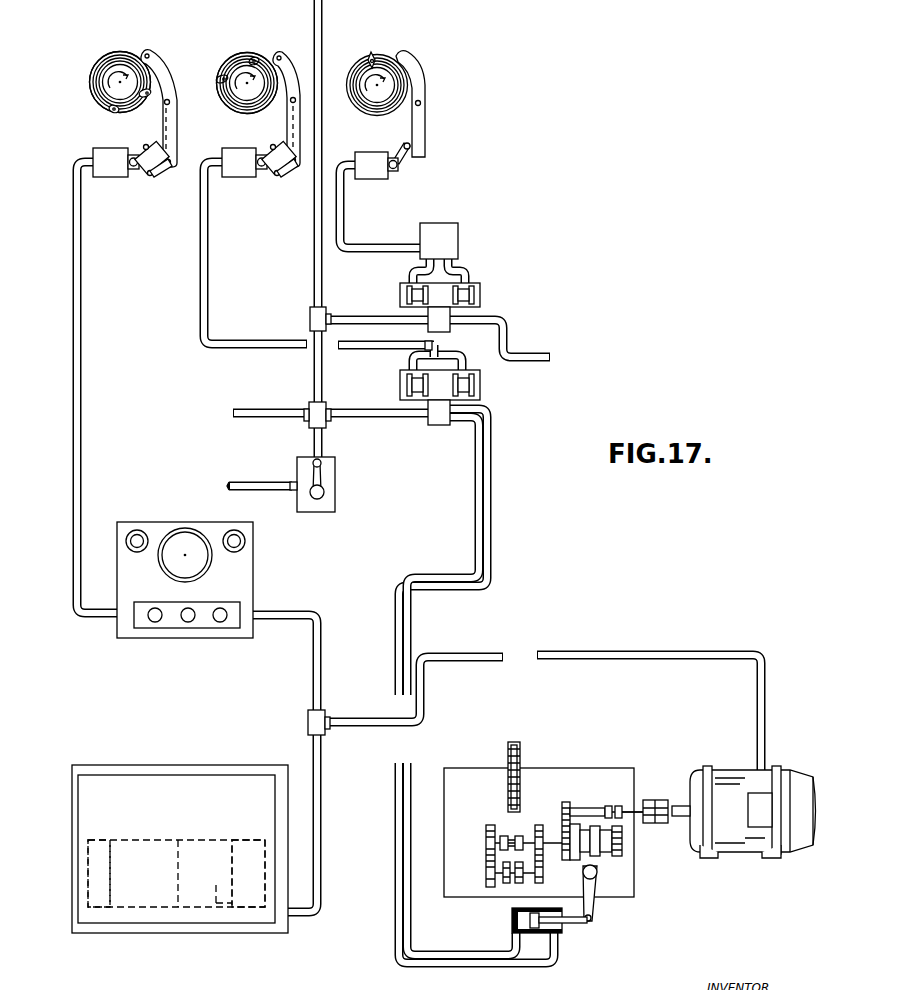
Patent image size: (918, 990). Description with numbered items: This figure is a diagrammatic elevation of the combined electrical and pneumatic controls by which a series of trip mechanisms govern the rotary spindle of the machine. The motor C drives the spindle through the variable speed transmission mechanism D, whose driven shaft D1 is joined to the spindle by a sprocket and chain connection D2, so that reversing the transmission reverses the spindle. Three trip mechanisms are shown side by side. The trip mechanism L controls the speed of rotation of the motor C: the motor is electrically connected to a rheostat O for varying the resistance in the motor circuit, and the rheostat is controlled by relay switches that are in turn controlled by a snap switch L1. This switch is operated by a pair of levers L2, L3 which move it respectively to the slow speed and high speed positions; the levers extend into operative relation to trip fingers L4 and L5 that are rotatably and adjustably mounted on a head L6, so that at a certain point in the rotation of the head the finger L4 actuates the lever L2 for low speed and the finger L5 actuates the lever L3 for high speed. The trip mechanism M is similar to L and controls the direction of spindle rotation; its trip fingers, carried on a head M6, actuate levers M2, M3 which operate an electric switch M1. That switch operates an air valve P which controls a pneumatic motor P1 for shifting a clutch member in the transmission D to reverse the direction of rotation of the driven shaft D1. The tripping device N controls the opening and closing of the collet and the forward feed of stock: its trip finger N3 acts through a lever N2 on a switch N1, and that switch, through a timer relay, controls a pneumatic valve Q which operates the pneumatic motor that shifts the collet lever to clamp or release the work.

The trip mechanism L is at (80, 86).
The snap switch L1 is at (108, 177).
The lever L2 is at (162, 125).
The lever L3 is at (175, 139).
The trip finger L4 is at (152, 95).
The trip finger L5 is at (262, 33).
The head L6 is at (112, 53).
The trip mechanism M is at (215, 60).
The electric switch M1 is at (248, 177).
The lever M2 is at (289, 124).
The lever M3 is at (302, 88).
The head M6 is at (238, 51).
The tripping device N is at (394, 48).
The switch N1 is at (378, 179).
The lever N2 is at (420, 138).
The trip finger N3 is at (371, 54).
The pneumatic valve Q is at (479, 293).
The air valve P is at (398, 385).
The rheostat O is at (255, 576).
The variable speed transmission mechanism D is at (552, 828).
The driven shaft D1 is at (506, 856).
The sprocket and chain connection D2 is at (523, 755).
The pneumatic motor P1 is at (570, 930).
The motor C is at (796, 769).